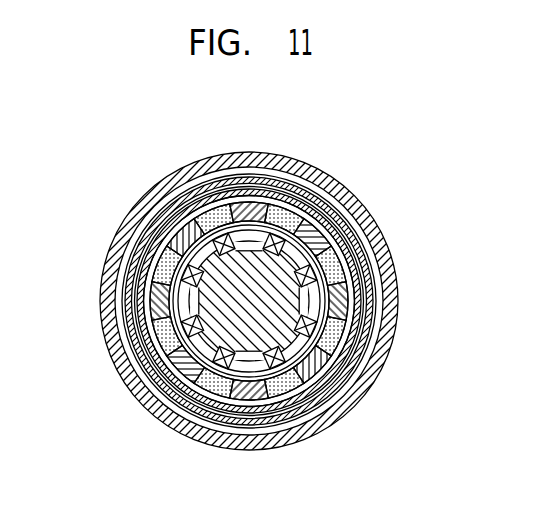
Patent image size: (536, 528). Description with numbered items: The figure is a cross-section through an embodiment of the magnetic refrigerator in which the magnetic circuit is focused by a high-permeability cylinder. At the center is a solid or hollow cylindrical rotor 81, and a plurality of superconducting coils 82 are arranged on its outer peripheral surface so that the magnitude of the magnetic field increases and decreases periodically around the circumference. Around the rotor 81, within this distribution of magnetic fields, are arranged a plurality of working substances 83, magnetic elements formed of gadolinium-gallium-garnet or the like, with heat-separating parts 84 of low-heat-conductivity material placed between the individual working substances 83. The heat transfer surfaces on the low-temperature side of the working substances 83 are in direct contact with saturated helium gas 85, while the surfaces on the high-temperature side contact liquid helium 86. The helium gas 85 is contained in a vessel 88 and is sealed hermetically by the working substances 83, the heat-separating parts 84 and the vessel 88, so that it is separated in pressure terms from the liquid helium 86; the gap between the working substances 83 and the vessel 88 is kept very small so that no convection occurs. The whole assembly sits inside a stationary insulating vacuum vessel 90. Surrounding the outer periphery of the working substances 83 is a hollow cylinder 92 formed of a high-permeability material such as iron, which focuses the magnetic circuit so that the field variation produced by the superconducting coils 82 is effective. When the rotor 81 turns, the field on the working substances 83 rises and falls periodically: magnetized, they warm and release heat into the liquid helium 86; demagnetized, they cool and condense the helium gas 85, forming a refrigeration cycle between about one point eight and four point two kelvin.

The rotor 81 is at (338, 233).
The superconducting coils 82 is at (372, 247).
The working substances 83 is at (320, 232).
The heat-separating parts 84 is at (157, 327).
The saturated helium gas 85 is at (148, 287).
The liquid helium 86 is at (167, 172).
The vessel 88 is at (358, 293).
The insulating vacuum vessel 90 is at (368, 330).
The hollow cylinder 92 is at (122, 247).